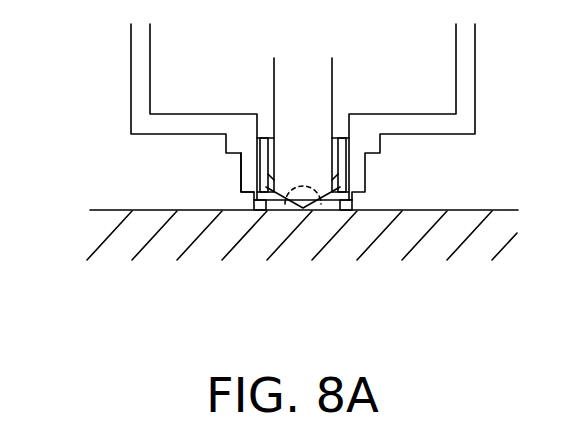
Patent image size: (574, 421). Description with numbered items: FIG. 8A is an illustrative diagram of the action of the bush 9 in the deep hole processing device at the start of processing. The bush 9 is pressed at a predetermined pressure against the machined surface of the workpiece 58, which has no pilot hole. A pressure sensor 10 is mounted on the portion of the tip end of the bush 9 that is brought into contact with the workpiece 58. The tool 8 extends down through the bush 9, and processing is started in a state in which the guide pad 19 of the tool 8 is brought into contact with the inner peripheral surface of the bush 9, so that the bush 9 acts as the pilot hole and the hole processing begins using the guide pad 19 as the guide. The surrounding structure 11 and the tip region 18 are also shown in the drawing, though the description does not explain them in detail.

The tool 8 is at (320, 78).
The bush 9 is at (252, 175).
The pressure sensor 10 is at (347, 207).
The housing 11 is at (136, 42).
The nozzle tip opening 18 is at (298, 209).
The guide pad 19 is at (334, 140).
The workpiece 58 is at (484, 210).